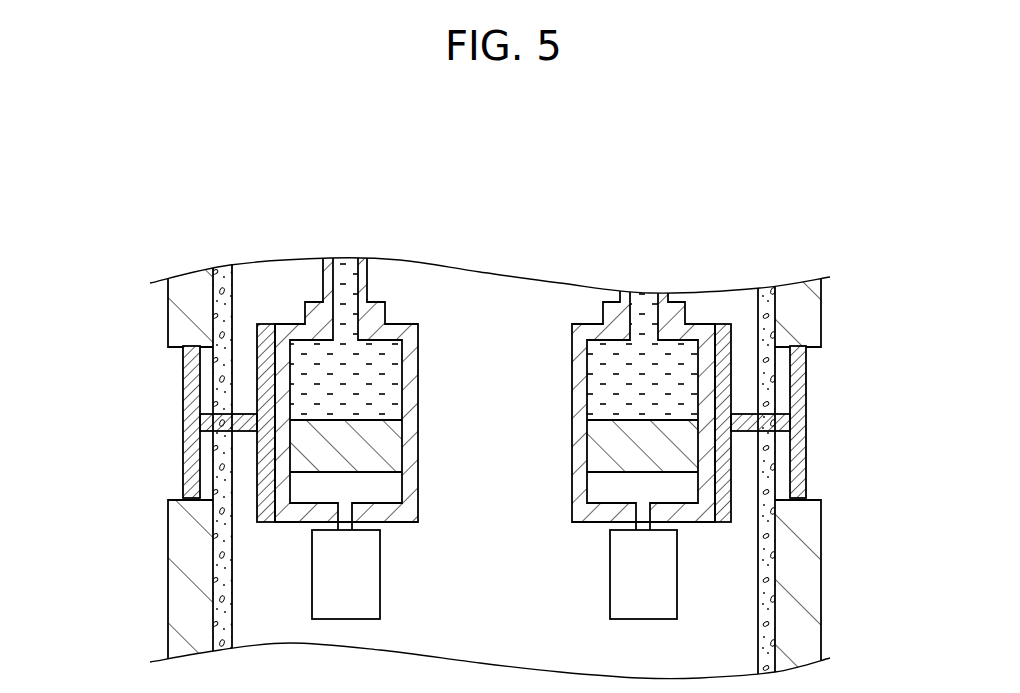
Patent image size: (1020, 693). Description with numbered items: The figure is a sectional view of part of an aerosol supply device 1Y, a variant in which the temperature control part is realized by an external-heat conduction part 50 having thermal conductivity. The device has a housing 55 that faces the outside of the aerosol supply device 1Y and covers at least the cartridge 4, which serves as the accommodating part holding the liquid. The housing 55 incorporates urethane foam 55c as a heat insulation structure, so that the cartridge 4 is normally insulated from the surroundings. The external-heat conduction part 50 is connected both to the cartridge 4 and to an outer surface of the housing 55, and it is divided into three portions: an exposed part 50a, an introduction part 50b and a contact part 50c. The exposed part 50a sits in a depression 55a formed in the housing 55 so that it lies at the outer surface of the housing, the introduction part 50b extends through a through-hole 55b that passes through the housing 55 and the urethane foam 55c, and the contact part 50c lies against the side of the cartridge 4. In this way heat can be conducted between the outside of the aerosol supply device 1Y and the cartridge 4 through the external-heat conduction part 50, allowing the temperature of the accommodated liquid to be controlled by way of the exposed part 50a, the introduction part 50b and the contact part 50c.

The aerosol supply device 1Y is at (731, 187).
The cartridge 4 is at (707, 523).
The external-heat conduction part 50 is at (841, 432).
The exposed part 50a is at (806, 398).
The introduction part 50b is at (750, 432).
The contact part 50c is at (730, 477).
The housing 55 is at (157, 423).
The depression 55a is at (177, 352).
The through-hole 55b is at (183, 418).
The urethane foam 55c is at (220, 467).